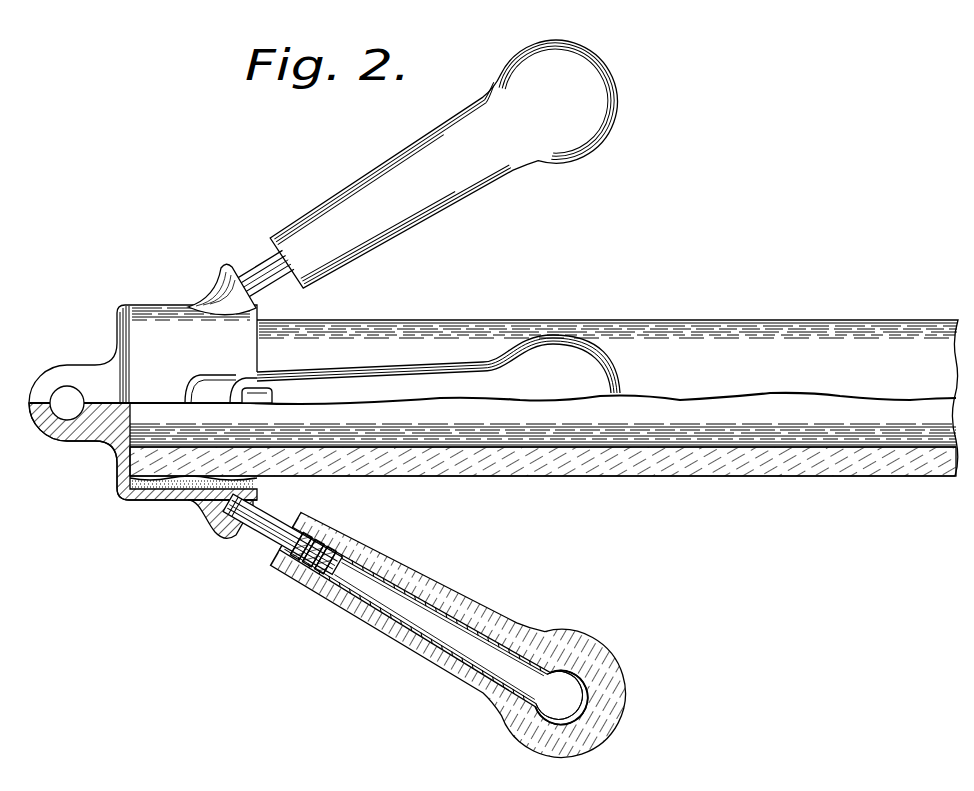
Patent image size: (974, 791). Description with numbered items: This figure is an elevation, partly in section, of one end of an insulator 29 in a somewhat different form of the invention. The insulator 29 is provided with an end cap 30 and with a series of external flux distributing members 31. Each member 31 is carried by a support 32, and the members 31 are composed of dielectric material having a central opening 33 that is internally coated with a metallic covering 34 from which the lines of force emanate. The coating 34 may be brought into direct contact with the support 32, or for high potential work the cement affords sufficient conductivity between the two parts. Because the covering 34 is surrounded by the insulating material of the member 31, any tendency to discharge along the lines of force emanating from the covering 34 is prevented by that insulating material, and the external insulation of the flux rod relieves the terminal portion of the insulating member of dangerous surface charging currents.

The insulator 29 is at (663, 457).
The end cap 30 is at (104, 444).
The external flux distributing member 31 is at (487, 366).
The support 32 is at (262, 392).
The central opening 33 is at (413, 606).
The metallic covering 34 is at (588, 688).